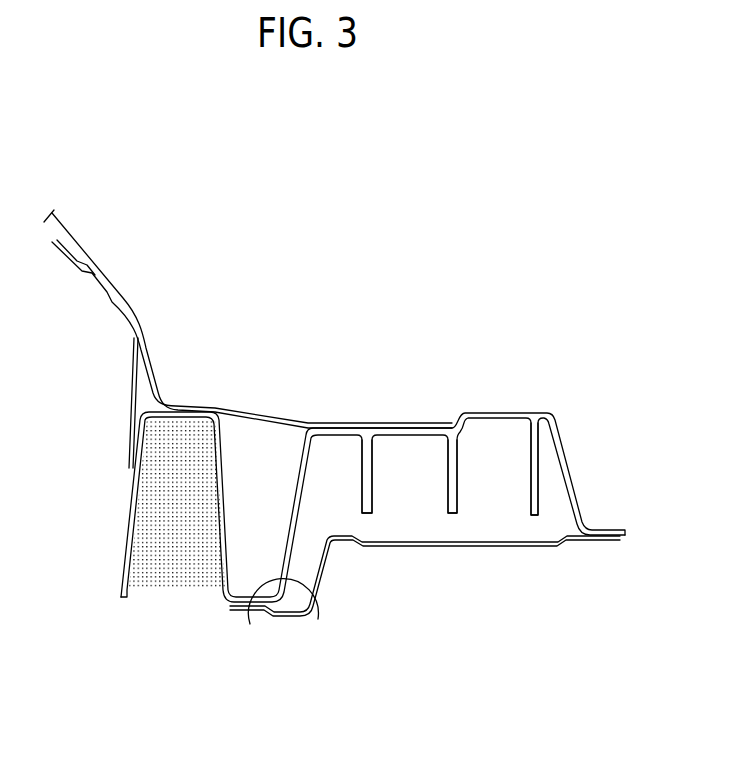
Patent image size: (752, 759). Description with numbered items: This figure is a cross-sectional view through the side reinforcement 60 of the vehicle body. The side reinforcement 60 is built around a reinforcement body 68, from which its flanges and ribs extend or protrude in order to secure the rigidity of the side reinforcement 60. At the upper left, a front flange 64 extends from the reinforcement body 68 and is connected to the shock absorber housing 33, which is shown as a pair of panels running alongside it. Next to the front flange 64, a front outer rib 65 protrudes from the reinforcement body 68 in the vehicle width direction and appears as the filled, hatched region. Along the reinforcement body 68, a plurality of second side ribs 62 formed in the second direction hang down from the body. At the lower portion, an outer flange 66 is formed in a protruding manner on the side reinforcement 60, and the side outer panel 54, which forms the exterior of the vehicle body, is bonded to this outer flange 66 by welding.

The shock absorber housing 33 is at (135, 401).
The side outer panel 54 is at (523, 543).
The side reinforcement 60 is at (194, 622).
The second side ribs 62 is at (455, 512).
The front flange 64 is at (142, 342).
The front outer rib 65 is at (143, 533).
The outer flange 66 is at (318, 619).
The reinforcement body 68 is at (266, 410).